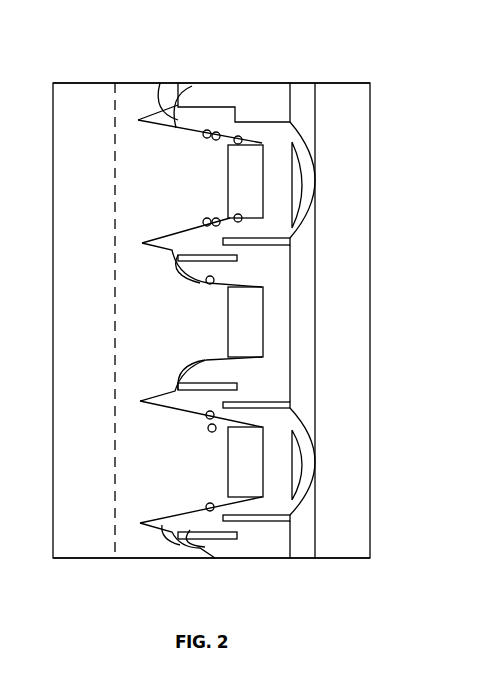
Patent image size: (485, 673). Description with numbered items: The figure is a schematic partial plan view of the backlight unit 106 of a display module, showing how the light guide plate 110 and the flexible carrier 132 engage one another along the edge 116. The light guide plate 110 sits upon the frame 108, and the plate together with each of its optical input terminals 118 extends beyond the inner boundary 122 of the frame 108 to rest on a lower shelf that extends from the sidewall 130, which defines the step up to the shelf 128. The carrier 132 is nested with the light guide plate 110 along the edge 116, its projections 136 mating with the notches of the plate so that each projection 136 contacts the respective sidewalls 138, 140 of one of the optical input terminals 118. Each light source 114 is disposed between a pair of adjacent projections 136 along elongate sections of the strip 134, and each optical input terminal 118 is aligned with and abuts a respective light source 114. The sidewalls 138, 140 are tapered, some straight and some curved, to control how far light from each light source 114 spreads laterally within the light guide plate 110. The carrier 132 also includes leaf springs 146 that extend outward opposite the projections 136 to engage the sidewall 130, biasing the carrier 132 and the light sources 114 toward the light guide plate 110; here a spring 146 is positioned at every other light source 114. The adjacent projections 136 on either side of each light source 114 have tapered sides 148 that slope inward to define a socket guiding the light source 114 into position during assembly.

The backlight unit 106 is at (303, 32).
The frame 108 is at (350, 86).
The light guide plate 110 is at (100, 83).
The light source 114 is at (234, 342).
The edge 116 is at (200, 548).
The optical input terminal 118 is at (200, 331).
The inner boundary 122 is at (113, 205).
The shelf 128 is at (338, 219).
The sidewall 130 is at (315, 306).
The carrier 132 is at (275, 83).
The strip 134 is at (282, 340).
The projection 136 is at (165, 83).
The straight sidewall 138 is at (218, 142).
The curved sidewall 140 is at (214, 286).
The spring 146 is at (310, 156).
The tapered side 148 is at (245, 141).